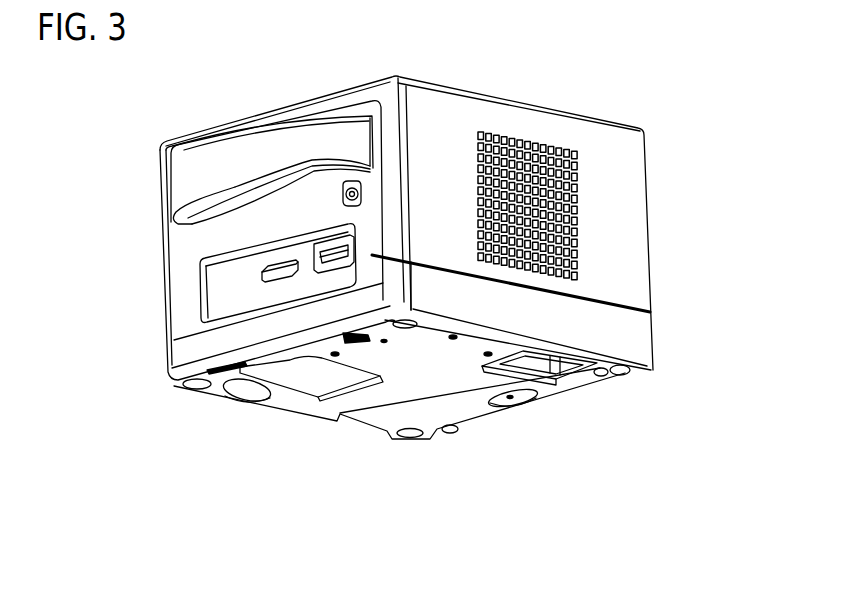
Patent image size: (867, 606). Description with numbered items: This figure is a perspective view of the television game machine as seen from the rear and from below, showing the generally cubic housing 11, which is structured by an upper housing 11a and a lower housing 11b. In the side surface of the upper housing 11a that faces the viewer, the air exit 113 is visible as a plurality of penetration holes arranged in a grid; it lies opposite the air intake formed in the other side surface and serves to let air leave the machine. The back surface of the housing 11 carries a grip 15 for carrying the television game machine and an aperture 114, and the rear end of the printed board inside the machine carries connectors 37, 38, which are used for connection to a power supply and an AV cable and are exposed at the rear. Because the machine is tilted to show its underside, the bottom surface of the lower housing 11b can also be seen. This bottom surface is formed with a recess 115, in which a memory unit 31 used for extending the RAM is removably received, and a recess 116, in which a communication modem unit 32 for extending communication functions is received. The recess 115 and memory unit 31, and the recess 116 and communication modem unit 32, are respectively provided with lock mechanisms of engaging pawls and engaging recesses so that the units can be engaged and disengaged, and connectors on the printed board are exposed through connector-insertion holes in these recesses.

The housing 11 is at (724, 298).
The upper housing 11a is at (630, 288).
The lower housing 11b is at (633, 337).
The grip 15 is at (221, 163).
The memory unit 31 is at (298, 398).
The communication modem unit 32 is at (447, 403).
The connector 37 is at (340, 270).
The connector 38 is at (262, 280).
The air exit 113 is at (576, 207).
The aperture 114 is at (200, 302).
The recess 115 is at (252, 400).
The recess 116 is at (523, 410).